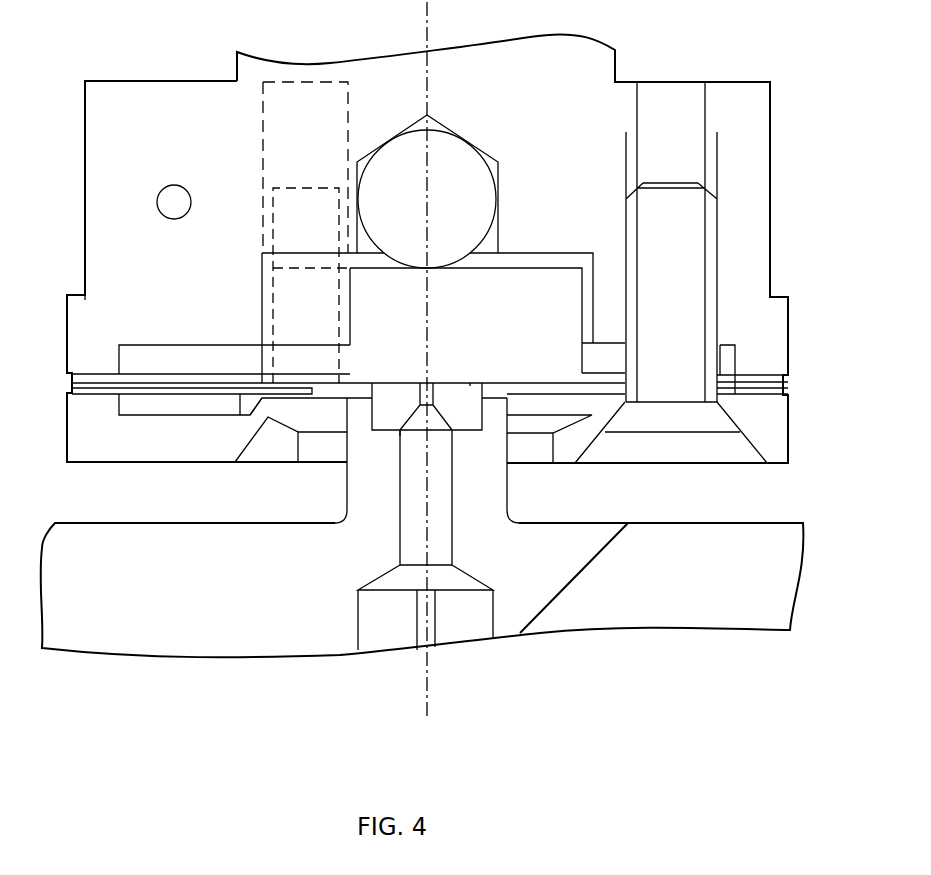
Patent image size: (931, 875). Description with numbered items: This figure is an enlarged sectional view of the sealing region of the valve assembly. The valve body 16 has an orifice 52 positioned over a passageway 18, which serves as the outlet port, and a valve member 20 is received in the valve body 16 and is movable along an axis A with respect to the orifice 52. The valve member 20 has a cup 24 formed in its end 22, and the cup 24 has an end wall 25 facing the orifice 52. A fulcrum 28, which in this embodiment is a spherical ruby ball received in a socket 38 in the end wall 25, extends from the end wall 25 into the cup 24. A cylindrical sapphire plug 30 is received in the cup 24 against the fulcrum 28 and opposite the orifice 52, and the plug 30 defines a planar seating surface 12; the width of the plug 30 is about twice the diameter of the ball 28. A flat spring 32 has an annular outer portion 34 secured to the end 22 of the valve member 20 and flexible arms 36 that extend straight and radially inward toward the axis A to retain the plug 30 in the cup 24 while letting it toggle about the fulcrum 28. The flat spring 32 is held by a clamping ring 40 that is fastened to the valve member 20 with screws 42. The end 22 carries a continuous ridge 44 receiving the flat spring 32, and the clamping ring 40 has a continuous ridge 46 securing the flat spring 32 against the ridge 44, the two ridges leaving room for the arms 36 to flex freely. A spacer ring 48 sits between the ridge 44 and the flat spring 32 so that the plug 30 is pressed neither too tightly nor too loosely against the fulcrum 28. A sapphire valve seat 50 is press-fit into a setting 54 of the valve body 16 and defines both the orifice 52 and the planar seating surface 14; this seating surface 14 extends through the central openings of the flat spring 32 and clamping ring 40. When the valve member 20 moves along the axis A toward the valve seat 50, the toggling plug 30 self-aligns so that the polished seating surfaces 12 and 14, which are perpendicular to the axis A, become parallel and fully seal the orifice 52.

The seating surface 12 is at (393, 386).
The seating surface 14 is at (407, 378).
The valve body 16 is at (790, 555).
The passageway 18 is at (440, 540).
The valve member 20 is at (157, 207).
The end 22 is at (733, 350).
The cup 24 is at (595, 282).
The end wall 25 is at (513, 250).
The fulcrum 28 is at (408, 153).
The plug 30 is at (546, 268).
The flat spring 32 is at (220, 372).
The outer portion 34 is at (90, 390).
The flexible arms 36 is at (242, 397).
The socket 38 is at (463, 140).
The clamping ring 40 is at (102, 450).
The screws 42 is at (695, 467).
The continuous ridge 44 is at (121, 359).
The continuous ridge 46 is at (120, 403).
The spacer ring 48 is at (93, 372).
The valve seat 50 is at (457, 372).
The orifice 52 is at (428, 380).
The setting 54 is at (495, 488).
The axis A is at (429, 693).